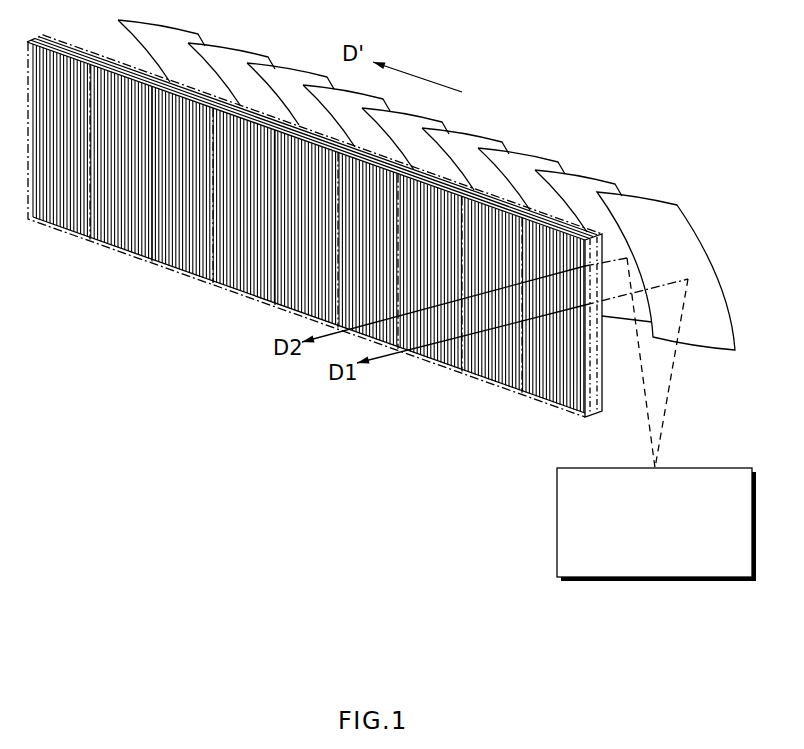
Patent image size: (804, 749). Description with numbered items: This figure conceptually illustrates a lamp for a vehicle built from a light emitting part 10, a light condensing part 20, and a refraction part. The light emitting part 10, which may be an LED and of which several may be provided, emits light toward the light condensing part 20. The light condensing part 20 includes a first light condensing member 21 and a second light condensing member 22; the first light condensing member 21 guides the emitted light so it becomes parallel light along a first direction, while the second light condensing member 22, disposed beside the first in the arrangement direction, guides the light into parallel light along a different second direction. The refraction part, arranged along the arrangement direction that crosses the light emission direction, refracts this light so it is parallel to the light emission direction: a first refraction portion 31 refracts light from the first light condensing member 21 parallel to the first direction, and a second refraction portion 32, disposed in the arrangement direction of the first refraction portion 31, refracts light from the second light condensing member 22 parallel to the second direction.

The light emitting part 10 is at (667, 559).
The light condensing part 20 is at (660, 104).
The first light condensing member 21 is at (640, 203).
The second light condensing member 22 is at (575, 187).
The first refraction portion 31 is at (545, 403).
The second refraction portion 32 is at (485, 382).